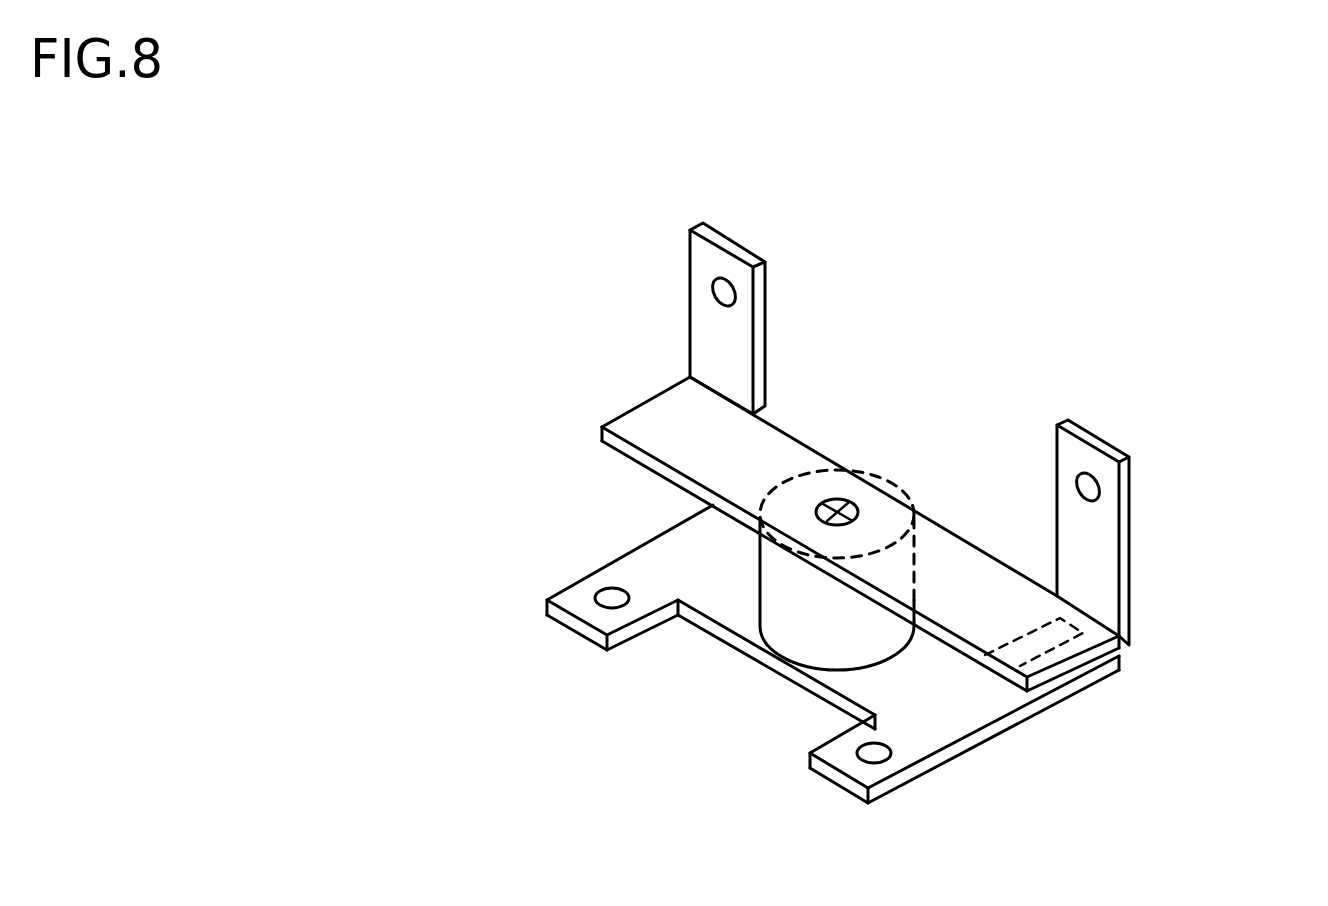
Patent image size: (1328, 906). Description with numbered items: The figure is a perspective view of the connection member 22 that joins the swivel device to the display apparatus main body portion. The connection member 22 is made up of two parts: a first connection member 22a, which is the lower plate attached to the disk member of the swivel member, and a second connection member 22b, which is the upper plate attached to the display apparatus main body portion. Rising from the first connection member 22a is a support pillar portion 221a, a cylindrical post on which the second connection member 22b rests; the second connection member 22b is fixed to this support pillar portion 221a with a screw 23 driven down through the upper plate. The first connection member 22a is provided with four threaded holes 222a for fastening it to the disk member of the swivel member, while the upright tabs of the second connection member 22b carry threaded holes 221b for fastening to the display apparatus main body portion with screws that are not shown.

The connection member 22 is at (605, 265).
The first connection member 22a is at (780, 592).
The second connection member 22b is at (933, 457).
The support pillar portion 221a is at (807, 632).
The threaded holes 221b is at (737, 291).
The threaded holes 222a is at (620, 607).
The screw 23 is at (857, 510).